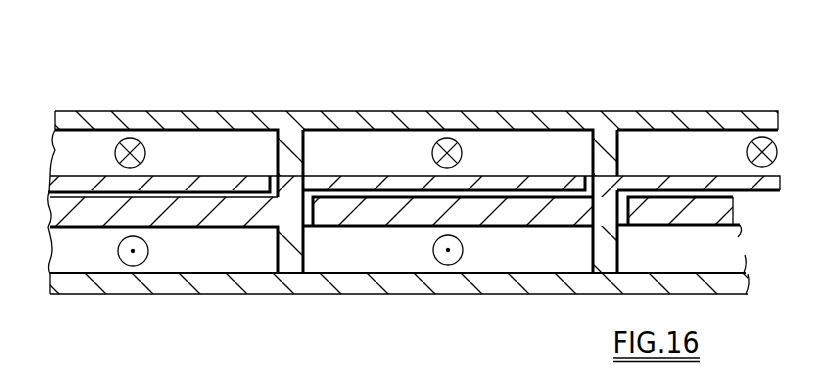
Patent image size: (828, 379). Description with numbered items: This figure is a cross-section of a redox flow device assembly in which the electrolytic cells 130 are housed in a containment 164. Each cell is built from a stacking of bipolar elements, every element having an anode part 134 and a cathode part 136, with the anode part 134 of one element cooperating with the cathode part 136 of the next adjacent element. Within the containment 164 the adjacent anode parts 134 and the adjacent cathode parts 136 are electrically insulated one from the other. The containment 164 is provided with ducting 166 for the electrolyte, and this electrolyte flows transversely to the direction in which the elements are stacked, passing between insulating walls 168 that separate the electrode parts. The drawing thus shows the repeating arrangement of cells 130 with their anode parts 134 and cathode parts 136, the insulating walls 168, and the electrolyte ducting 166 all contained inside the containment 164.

The electrolytic cell 130 is at (166, 143).
The anode part 134 is at (347, 218).
The cathode part 136 is at (217, 182).
The containment 164 is at (332, 123).
The ducting 166 is at (78, 139).
The insulating wall 168 is at (303, 141).